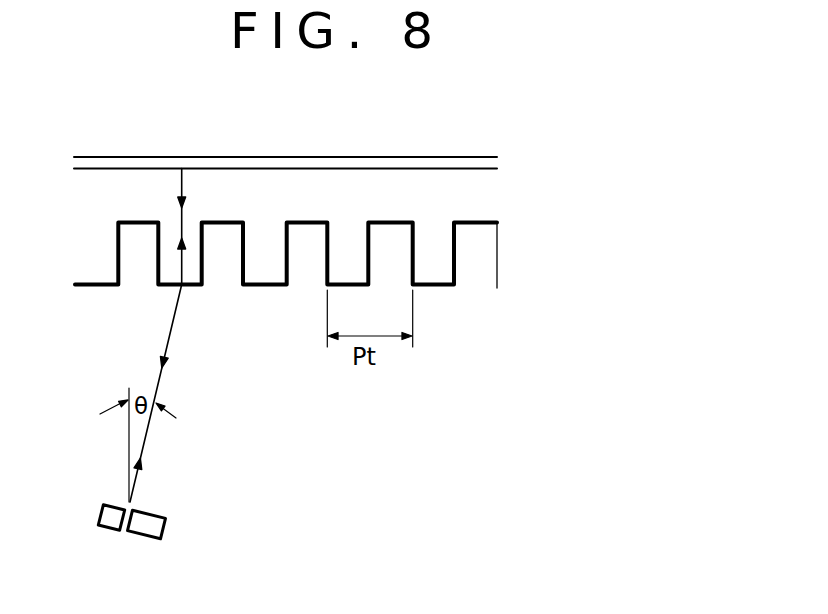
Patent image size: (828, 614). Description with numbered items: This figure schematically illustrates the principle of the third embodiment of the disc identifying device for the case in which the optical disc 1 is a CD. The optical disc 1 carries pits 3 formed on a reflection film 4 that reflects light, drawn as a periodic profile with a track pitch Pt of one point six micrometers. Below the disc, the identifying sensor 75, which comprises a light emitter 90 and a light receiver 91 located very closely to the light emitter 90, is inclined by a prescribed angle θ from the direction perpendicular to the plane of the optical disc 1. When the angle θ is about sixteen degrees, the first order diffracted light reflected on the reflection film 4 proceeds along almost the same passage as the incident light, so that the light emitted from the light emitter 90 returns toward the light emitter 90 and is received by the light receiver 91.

The optical disc 1 is at (367, 230).
The pit 3 is at (439, 267).
The reflection film 4 is at (412, 155).
The identifying sensor 75 is at (146, 520).
The light emitter 90 is at (105, 528).
The light receiver 91 is at (146, 538).